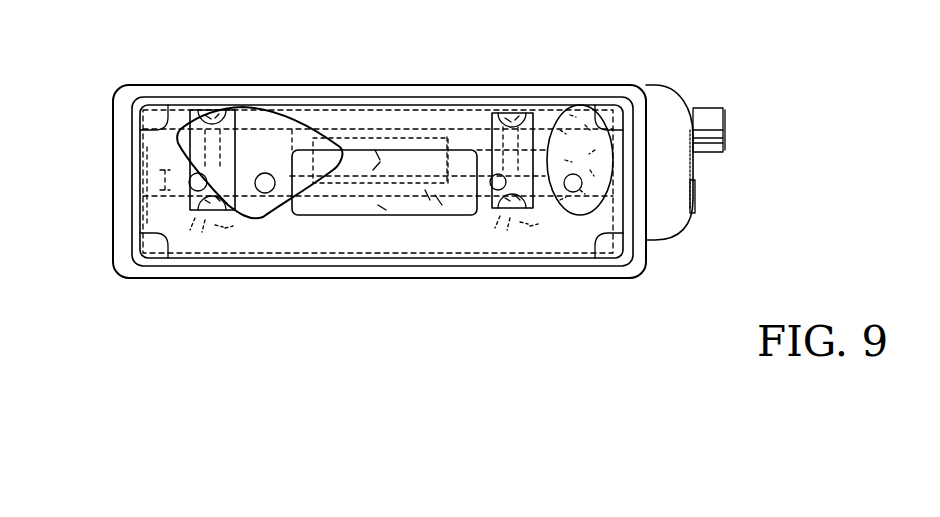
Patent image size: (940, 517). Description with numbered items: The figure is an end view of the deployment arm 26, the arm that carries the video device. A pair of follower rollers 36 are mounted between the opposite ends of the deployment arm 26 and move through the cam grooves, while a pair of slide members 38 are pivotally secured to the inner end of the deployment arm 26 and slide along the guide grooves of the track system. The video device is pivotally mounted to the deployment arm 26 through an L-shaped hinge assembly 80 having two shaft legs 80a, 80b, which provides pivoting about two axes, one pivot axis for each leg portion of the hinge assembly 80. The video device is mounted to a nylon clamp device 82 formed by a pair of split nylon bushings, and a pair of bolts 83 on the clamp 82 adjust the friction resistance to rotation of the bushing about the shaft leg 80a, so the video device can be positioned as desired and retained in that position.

The deployment arm 26 is at (662, 80).
The follower rollers 36 is at (717, 122).
The slide members 38 is at (697, 200).
The hinge assembly 80 is at (647, 265).
The shaft leg 80a is at (288, 185).
The shaft leg 80b is at (563, 258).
The clamp device 82 is at (233, 107).
The bolts 83 is at (192, 112).